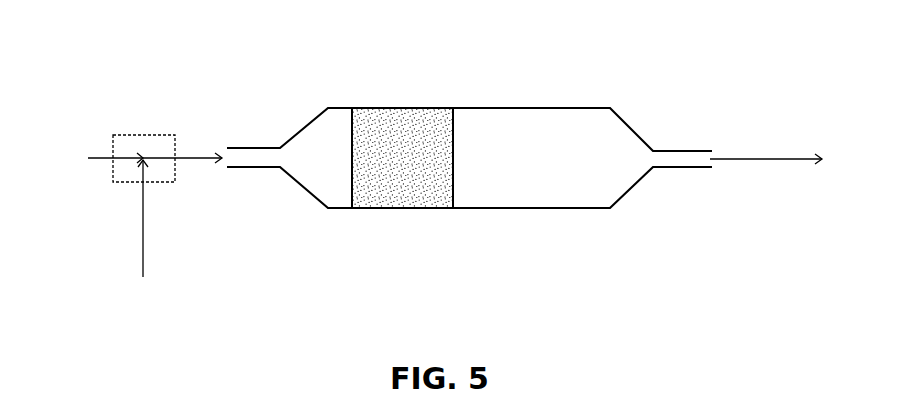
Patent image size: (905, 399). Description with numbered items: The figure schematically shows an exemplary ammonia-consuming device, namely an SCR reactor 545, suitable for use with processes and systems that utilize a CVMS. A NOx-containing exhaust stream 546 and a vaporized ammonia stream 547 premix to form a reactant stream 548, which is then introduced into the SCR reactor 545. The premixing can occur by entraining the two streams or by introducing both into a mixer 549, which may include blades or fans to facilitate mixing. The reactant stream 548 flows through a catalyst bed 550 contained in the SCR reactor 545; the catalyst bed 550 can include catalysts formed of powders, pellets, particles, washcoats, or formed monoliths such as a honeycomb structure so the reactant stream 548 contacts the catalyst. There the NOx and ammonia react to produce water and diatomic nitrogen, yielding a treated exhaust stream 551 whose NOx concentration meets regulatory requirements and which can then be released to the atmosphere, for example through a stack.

The SCR reactor 545 is at (415, 60).
The NOx-containing exhaust stream 546 is at (100, 158).
The vaporized ammonia stream 547 is at (143, 277).
The reactant stream 548 is at (192, 158).
The mixer 549 is at (143, 135).
The catalyst bed 550 is at (403, 190).
The treated exhaust stream 551 is at (790, 159).